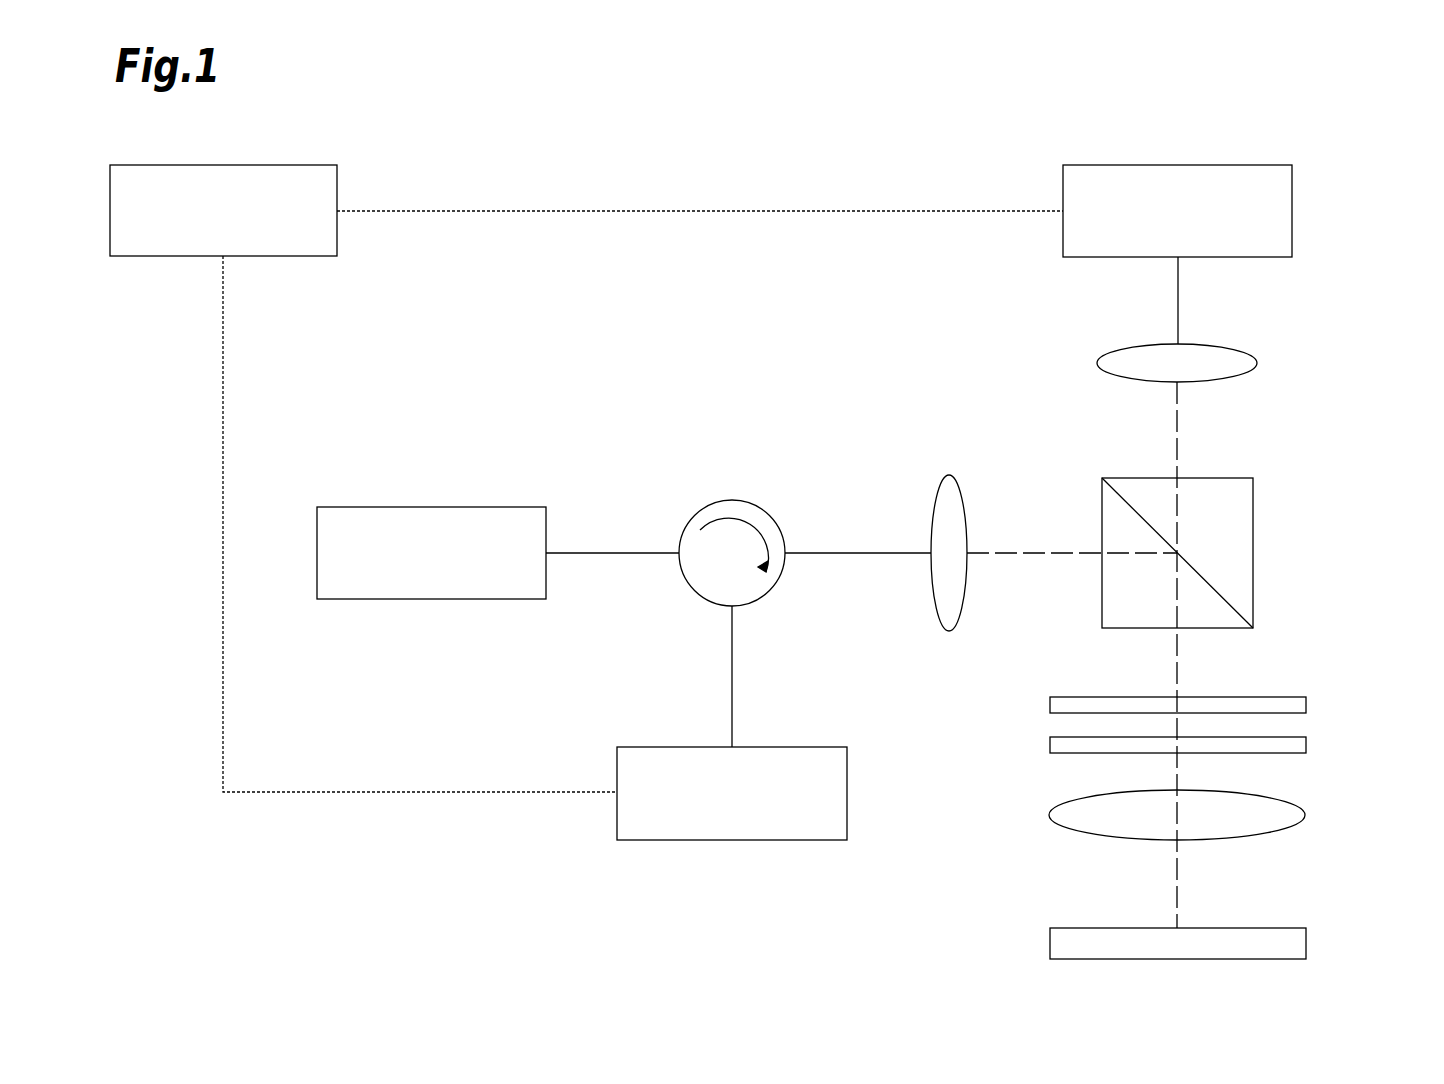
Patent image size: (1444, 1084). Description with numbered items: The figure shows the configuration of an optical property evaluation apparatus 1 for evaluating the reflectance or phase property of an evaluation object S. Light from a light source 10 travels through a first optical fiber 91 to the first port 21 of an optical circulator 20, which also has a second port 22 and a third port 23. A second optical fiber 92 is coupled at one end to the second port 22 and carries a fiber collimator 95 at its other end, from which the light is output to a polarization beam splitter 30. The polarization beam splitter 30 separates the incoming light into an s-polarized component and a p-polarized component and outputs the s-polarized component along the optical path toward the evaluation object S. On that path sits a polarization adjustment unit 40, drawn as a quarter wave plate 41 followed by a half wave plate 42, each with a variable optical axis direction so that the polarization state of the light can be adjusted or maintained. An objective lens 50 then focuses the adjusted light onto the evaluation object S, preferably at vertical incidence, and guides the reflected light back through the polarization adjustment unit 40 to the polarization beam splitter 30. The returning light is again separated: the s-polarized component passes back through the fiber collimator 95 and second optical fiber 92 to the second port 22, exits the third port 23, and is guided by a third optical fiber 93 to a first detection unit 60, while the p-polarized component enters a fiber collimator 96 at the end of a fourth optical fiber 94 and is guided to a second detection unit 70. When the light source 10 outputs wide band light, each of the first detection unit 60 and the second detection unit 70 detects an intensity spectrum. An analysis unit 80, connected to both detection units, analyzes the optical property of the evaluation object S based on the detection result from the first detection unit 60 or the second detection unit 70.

The optical property evaluation apparatus 1 is at (752, 178).
The light source 10 is at (350, 507).
The optical circulator 20 is at (730, 500).
The first port 21 is at (680, 560).
The second port 22 is at (785, 560).
The third port 23 is at (730, 607).
The polarization beam splitter 30 is at (1253, 501).
The polarization adjustment unit 40 is at (1239, 721).
The quarter wave plate 41 is at (1306, 703).
The half wave plate 42 is at (1214, 743).
The objective lens 50 is at (1306, 815).
The first detection unit 60 is at (668, 840).
The second detection unit 70 is at (1292, 185).
The analysis unit 80 is at (157, 165).
The first optical fiber 91 is at (586, 553).
The second optical fiber 92 is at (868, 553).
The third optical fiber 93 is at (733, 680).
The fourth optical fiber 94 is at (1178, 292).
The fiber collimator 95 is at (948, 475).
The fiber collimator 96 is at (1257, 361).
The evaluation object S is at (1306, 940).